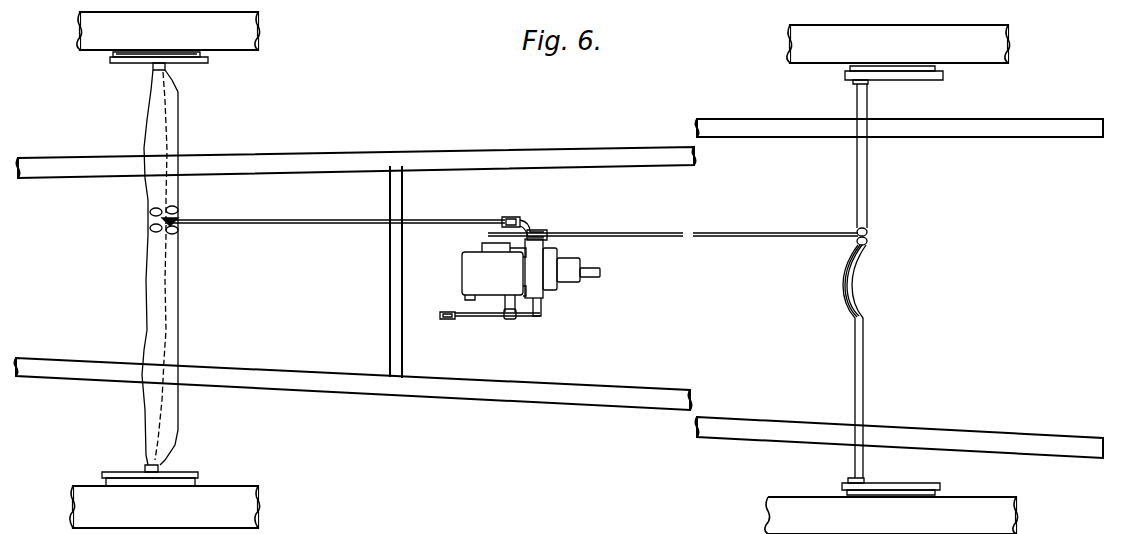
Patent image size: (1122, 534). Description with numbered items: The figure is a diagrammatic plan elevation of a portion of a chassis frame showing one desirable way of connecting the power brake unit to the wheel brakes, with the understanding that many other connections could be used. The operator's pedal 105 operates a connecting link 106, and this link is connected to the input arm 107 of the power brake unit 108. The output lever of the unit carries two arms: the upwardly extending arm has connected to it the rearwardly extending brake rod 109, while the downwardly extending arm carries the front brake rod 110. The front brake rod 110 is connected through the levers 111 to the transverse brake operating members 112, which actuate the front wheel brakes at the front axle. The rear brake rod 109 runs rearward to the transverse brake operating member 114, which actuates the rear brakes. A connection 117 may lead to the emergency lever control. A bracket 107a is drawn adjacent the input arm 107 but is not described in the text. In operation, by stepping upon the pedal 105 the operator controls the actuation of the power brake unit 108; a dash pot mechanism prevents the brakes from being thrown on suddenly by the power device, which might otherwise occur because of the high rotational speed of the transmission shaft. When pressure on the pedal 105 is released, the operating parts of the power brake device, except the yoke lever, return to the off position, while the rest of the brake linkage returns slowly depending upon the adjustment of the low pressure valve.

The pedal 105 is at (441, 320).
The connecting link 106 is at (472, 318).
The input arm 107 is at (511, 321).
The bracket 107a is at (542, 313).
The power brake unit 108 is at (535, 270).
The rearwardly extending brake rod 109 is at (732, 239).
The front brake rod 110 is at (335, 209).
The levers 111 is at (150, 227).
The transverse brake operating members 112 is at (179, 122).
The transverse brake operating member 114 is at (868, 380).
The connection to the emergency lever control 117 is at (497, 233).